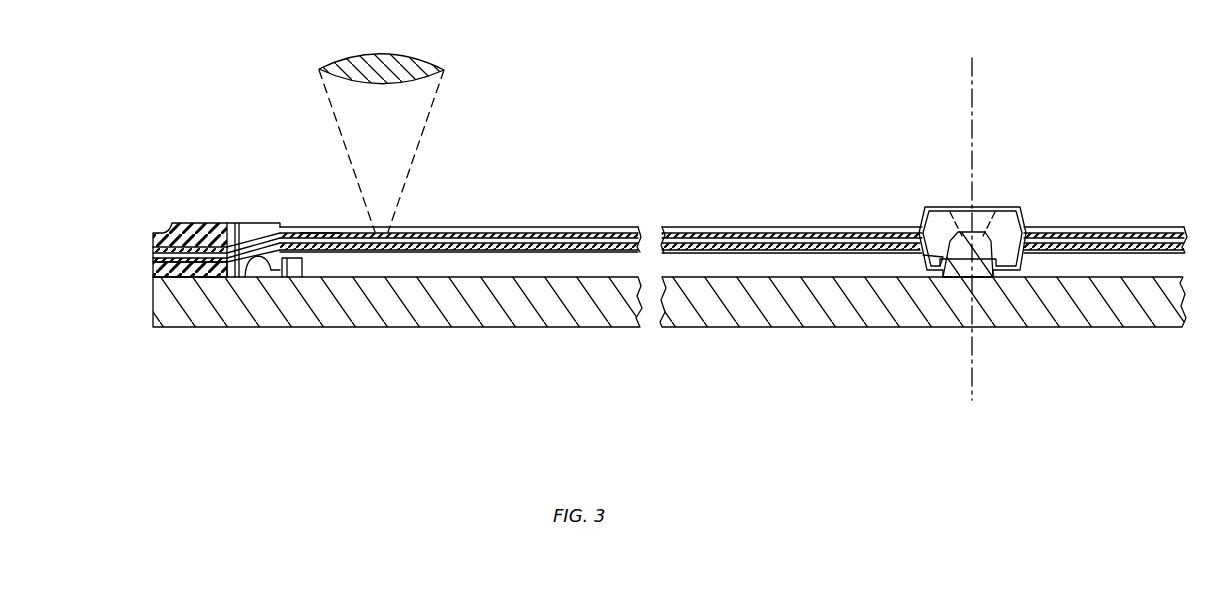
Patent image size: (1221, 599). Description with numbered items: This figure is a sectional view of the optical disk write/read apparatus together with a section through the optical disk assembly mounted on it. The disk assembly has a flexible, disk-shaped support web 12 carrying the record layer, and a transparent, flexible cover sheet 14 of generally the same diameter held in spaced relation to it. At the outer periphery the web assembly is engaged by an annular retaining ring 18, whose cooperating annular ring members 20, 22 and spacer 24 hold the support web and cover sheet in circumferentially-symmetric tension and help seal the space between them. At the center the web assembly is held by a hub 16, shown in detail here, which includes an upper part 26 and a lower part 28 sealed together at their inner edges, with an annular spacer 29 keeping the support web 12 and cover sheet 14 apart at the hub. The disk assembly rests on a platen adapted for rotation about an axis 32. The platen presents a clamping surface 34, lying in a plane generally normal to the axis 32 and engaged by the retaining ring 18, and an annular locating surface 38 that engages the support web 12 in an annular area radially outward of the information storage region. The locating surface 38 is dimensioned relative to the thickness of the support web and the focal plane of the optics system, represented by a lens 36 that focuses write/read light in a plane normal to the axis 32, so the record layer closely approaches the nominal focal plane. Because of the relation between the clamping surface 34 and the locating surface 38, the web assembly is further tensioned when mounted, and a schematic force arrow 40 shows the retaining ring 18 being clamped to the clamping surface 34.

The support web 12 is at (597, 253).
The cover sheet 14 is at (535, 235).
The hub 16 is at (1000, 207).
The retaining ring 18 is at (238, 223).
The ring member 20 is at (183, 228).
The ring member 22 is at (165, 280).
The spacer 24 is at (322, 233).
The upper part 26 is at (927, 213).
The lower part 28 is at (930, 257).
The annular spacer 29 is at (810, 240).
The axis 32 is at (985, 371).
The clamping surface 34 is at (215, 284).
The lens 36 is at (414, 58).
The locating surface 38 is at (297, 268).
The force arrow 40 is at (208, 224).